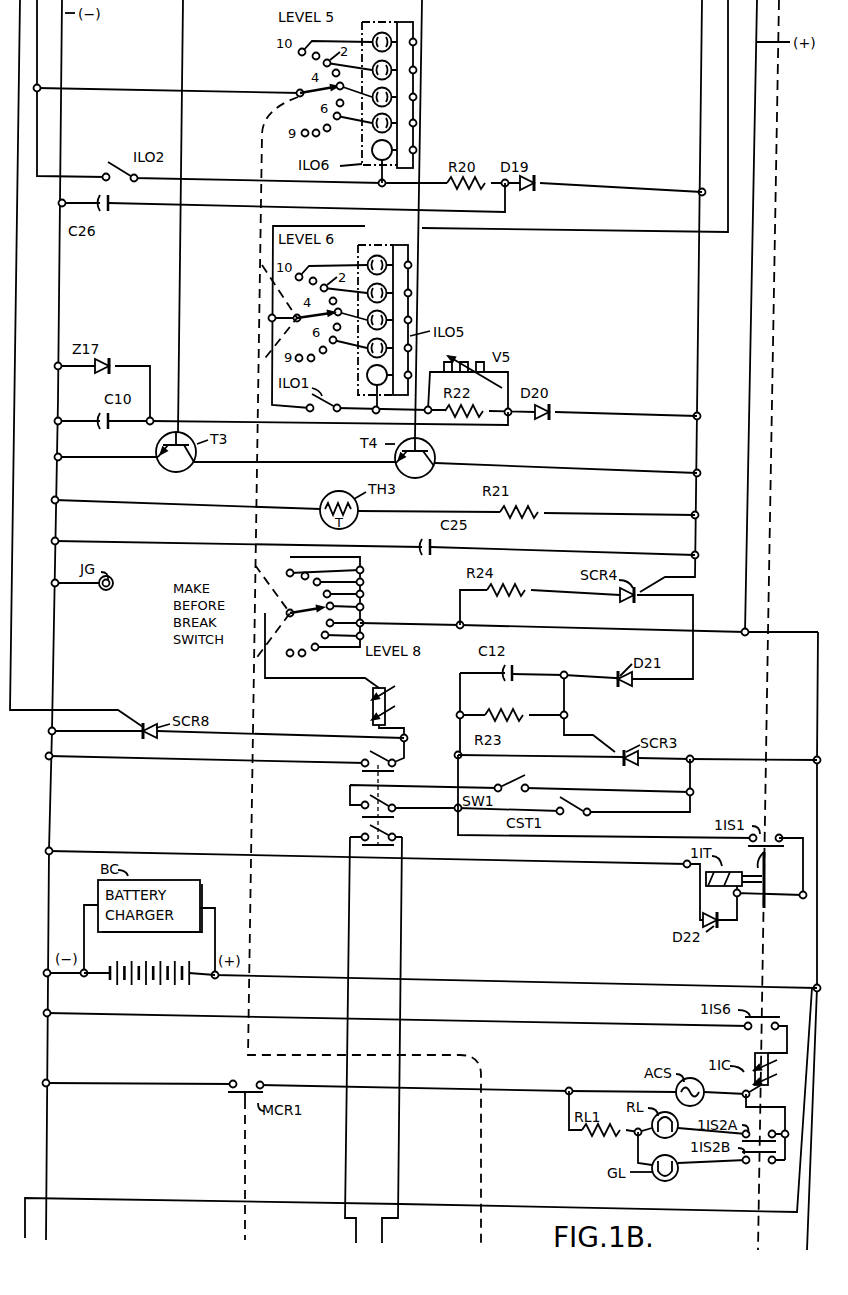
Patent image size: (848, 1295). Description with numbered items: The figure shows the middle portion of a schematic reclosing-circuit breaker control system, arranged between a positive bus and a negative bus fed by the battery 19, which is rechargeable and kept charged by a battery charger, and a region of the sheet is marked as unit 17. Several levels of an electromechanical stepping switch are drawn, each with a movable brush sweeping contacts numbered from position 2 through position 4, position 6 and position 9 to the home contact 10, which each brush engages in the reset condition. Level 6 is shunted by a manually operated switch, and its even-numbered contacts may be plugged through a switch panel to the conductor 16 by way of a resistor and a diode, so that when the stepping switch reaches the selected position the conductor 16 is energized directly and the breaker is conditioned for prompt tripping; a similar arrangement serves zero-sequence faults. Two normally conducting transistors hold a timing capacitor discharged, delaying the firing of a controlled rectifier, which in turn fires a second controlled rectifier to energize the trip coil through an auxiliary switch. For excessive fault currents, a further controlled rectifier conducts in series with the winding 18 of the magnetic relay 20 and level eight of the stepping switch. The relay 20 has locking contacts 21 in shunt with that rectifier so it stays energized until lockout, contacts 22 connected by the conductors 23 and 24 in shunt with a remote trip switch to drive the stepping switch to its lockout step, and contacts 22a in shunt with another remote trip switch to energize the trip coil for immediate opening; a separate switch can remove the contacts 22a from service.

The conductor 16 is at (700, 52).
The control unit 17 is at (725, 711).
The winding 18 is at (388, 692).
The battery 19 is at (157, 967).
The magnetic relay 20 is at (371, 702).
The locking contacts 21 is at (368, 758).
The contacts 22 is at (366, 834).
The contacts 22a is at (391, 806).
The conductor 23 is at (402, 962).
The conductor 24 is at (348, 956).
The contact 10 is at (288, 569).
The position 2 is at (312, 585).
The position 4 is at (322, 596).
The level 6 is at (326, 624).
The position 9 is at (301, 654).